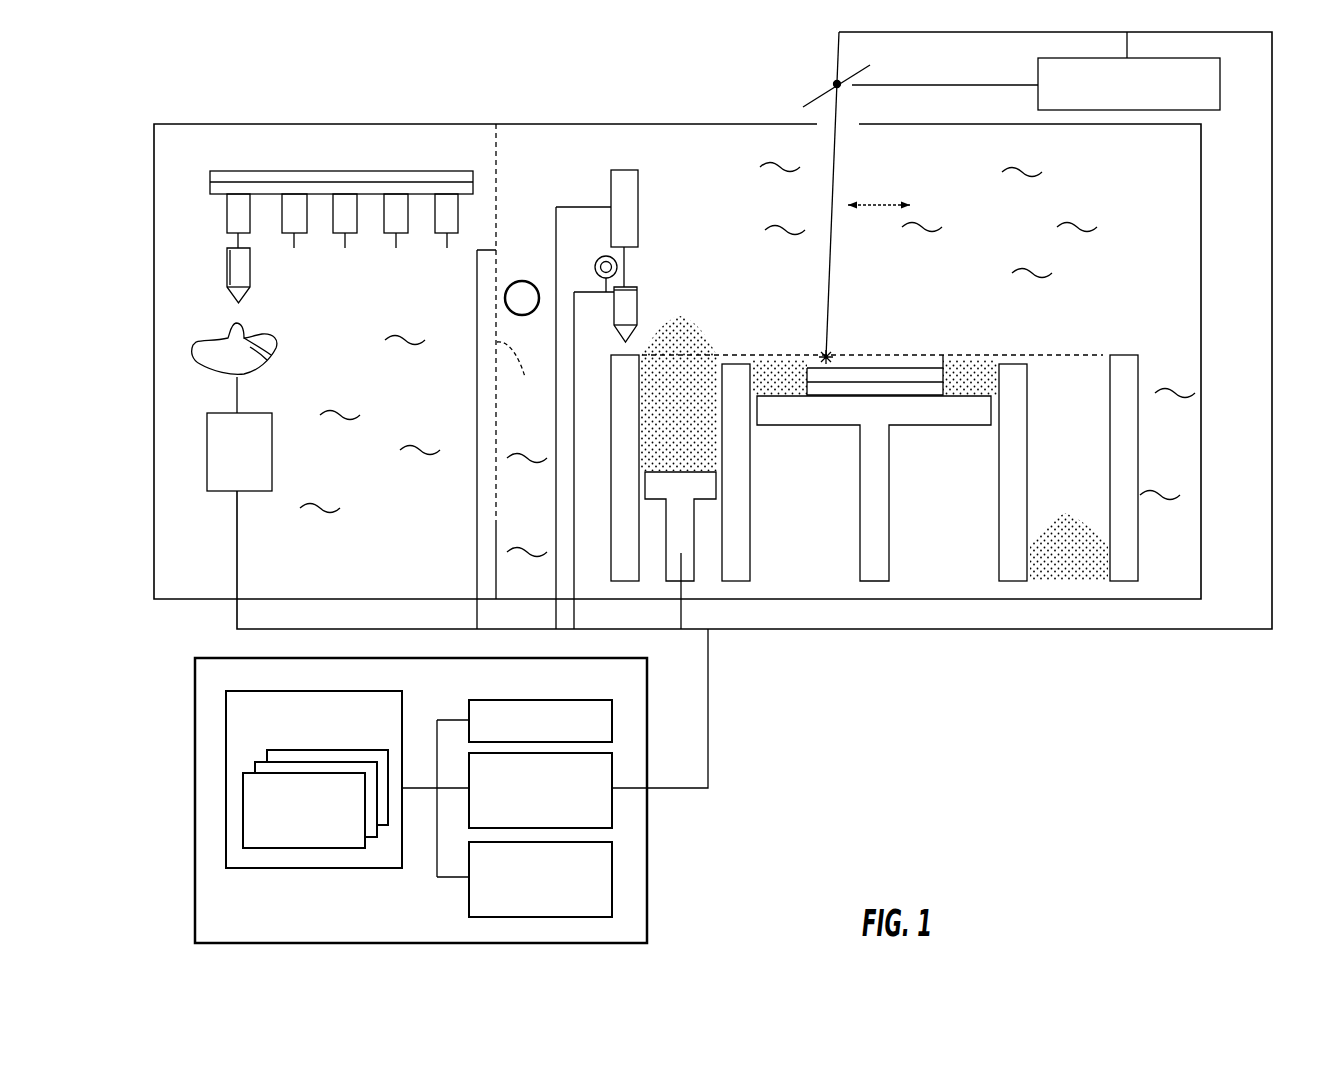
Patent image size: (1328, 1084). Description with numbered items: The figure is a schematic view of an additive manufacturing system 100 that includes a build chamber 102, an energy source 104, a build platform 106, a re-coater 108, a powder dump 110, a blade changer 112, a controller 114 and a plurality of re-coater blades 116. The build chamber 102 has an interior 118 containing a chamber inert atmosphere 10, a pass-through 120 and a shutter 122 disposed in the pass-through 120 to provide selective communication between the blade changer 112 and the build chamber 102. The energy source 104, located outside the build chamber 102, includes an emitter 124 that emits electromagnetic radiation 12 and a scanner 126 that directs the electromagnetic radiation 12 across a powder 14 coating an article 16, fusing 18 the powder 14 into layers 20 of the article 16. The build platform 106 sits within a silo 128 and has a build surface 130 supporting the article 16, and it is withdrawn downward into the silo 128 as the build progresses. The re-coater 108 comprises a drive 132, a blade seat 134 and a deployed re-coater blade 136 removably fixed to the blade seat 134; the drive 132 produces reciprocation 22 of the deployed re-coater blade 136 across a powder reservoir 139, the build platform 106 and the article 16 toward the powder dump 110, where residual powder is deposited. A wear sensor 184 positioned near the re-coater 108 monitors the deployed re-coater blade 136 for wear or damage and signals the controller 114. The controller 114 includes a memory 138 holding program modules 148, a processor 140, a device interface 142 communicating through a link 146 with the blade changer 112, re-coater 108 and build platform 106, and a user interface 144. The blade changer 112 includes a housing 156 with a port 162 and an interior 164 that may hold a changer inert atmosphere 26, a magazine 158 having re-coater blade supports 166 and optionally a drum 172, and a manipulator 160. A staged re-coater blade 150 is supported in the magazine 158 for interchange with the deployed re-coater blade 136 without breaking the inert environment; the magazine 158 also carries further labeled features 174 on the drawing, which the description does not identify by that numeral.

The chamber inert atmosphere 10 is at (1178, 262).
The electromagnetic radiation 12 is at (912, 85).
The powder 14 is at (781, 378).
The article 16 is at (902, 330).
The fusing 18 is at (826, 358).
The layers 20 is at (866, 376).
The reciprocation 22 is at (882, 205).
The changer inert atmosphere 26 is at (178, 330).
The additive manufacturing system 100 is at (144, 941).
The build chamber 102 is at (636, 110).
The energy source 104 is at (1217, 125).
The build platform 106 is at (924, 503).
The re-coater 108 is at (704, 245).
The powder dump 110 is at (1071, 585).
The blade changer 112 is at (358, 97).
The controller 114 is at (195, 878).
The re-coater blades 116 is at (240, 258).
The interior 118 is at (1124, 181).
The pass-through 120 is at (518, 277).
The shutter 122 is at (519, 378).
The emitter 124 is at (736, 360).
The scanner 126 is at (817, 98).
The silo 128 is at (976, 474).
The build surface 130 is at (965, 372).
The drive 132 is at (626, 170).
The blade seat 134 is at (630, 272).
The deployed re-coater blade 136 is at (640, 305).
The memory 138 is at (226, 722).
The powder reservoir 139 is at (708, 580).
The processor 140 is at (612, 720).
The device interface 142 is at (612, 808).
The user interface 144 is at (612, 875).
The link 146 is at (1227, 629).
The program modules 148 is at (243, 812).
The staged re-coater blade 150 is at (227, 268).
The housing 156 is at (178, 124).
The magazine 158 is at (388, 160).
The manipulator 160 is at (218, 490).
The port 162 is at (460, 480).
The interior 164 is at (322, 582).
The re-coater blade supports 166 is at (233, 238).
The drum 172 is at (292, 185).
The manifold outlets 174 is at (227, 220).
The wear sensor 184 is at (598, 262).